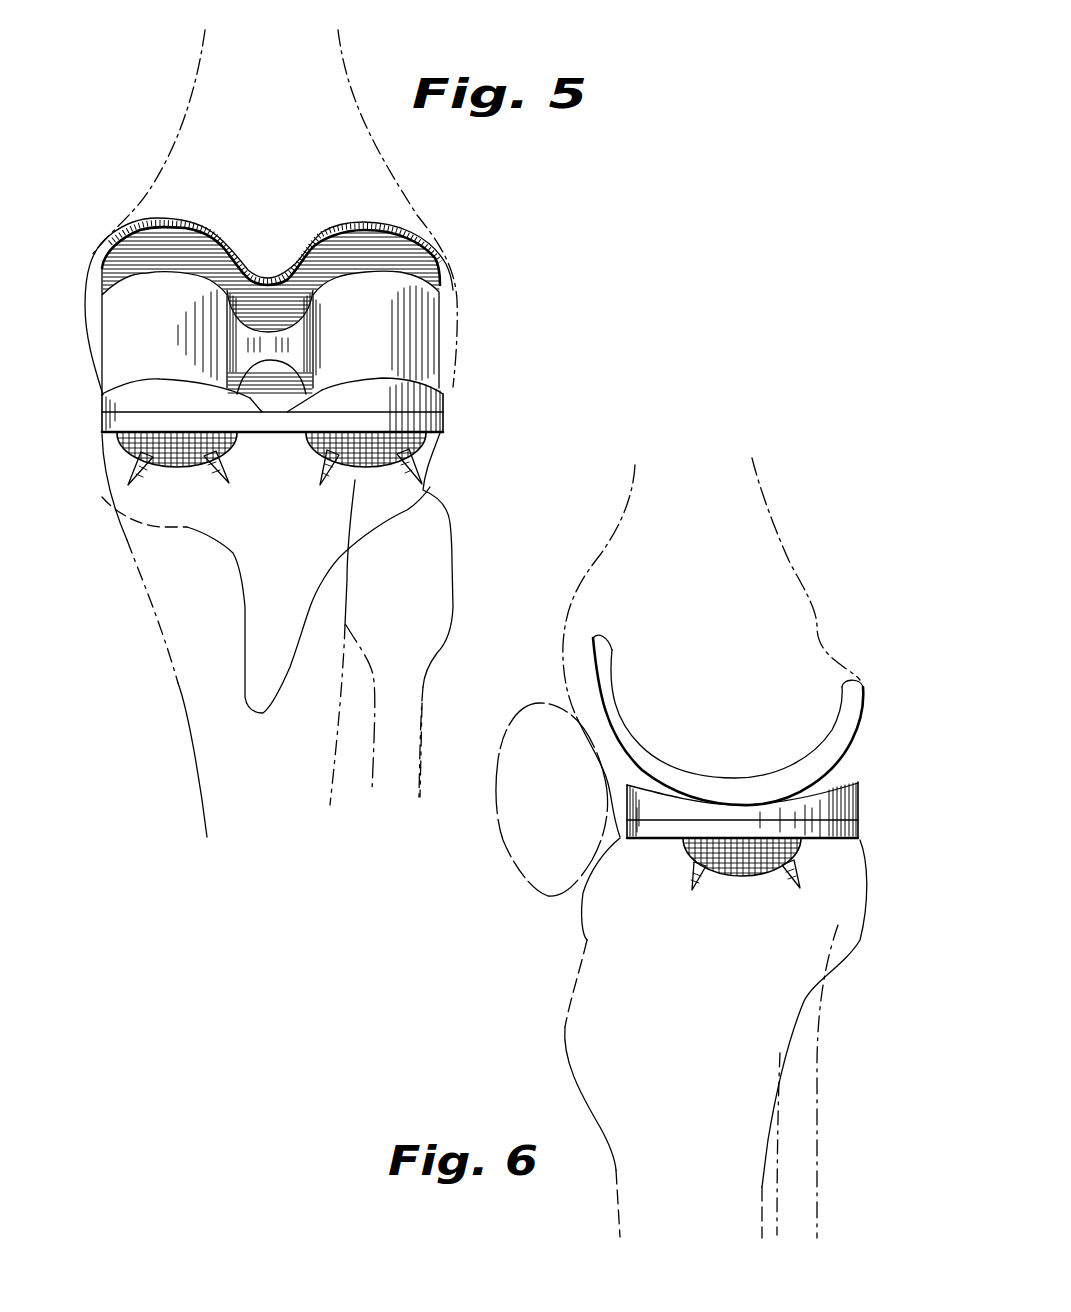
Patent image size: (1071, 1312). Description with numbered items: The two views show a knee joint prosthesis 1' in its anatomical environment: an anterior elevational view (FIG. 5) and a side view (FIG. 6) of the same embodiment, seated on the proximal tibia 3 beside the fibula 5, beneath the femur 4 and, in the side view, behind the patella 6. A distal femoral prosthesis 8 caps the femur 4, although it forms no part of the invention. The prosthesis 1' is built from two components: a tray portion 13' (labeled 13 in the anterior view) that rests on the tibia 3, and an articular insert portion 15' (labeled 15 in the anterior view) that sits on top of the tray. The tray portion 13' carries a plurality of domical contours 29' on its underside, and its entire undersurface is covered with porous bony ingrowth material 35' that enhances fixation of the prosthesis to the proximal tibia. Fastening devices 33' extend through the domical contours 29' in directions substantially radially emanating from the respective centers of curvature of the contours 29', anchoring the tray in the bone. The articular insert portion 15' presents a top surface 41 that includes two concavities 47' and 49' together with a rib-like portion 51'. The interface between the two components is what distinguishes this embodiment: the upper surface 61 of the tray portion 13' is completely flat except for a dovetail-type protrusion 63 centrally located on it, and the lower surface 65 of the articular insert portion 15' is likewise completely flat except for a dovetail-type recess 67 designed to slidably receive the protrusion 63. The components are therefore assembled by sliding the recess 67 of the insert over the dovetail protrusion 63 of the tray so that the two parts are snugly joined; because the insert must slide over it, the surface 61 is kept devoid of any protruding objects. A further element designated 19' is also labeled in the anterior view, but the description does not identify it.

In FIG. 5, the prosthesis 1' is at (338, 325).
In FIG. 6, the prosthesis 1' is at (753, 729).
In FIG. 5, the tibia 3 is at (193, 757).
In FIG. 6, the tibia 3 is at (601, 996).
In FIG. 5, the femur 4 is at (322, 75).
In FIG. 6, the femur 4 is at (758, 513).
In FIG. 5, the fibula 5 is at (423, 737).
In FIG. 6, the fibula 5 is at (809, 1152).
In FIG. 6, the patella 6 is at (510, 820).
In FIG. 5, the distal femoral prosthesis 8 is at (446, 262).
In FIG. 6, the distal femoral prosthesis 8 is at (611, 715).
In FIG. 5, the tray portion 13 is at (315, 414).
In FIG. 6, the tray portion 13' is at (768, 811).
In FIG. 5, the articular insert portion 15 is at (315, 405).
In FIG. 6, the articular insert portion 15' is at (768, 811).
In FIG. 5, the anchoring portion 19' is at (286, 485).
In FIG. 5, the domical contours 29' is at (271, 483).
In FIG. 6, the domical contours 29' is at (742, 895).
In FIG. 5, the fastening devices 33' is at (280, 514).
In FIG. 6, the fastening devices 33' is at (747, 897).
In FIG. 5, the porous bony ingrowth material 35' is at (265, 507).
In FIG. 6, the porous bony ingrowth material 35' is at (745, 899).
In FIG. 6, the top surface 41 is at (830, 792).
In FIG. 5, the concavity 47' is at (376, 347).
In FIG. 5, the concavity 49' is at (133, 331).
In FIG. 5, the rib-like portion 51' is at (277, 281).
In FIG. 5, the upper surface 61 is at (405, 410).
In FIG. 6, the upper surface 61 is at (677, 820).
In FIG. 5, the dovetail-type protrusion 63 is at (280, 408).
In FIG. 5, the lower surface 65 is at (380, 453).
In FIG. 5, the dovetail-type recess 67 is at (260, 403).